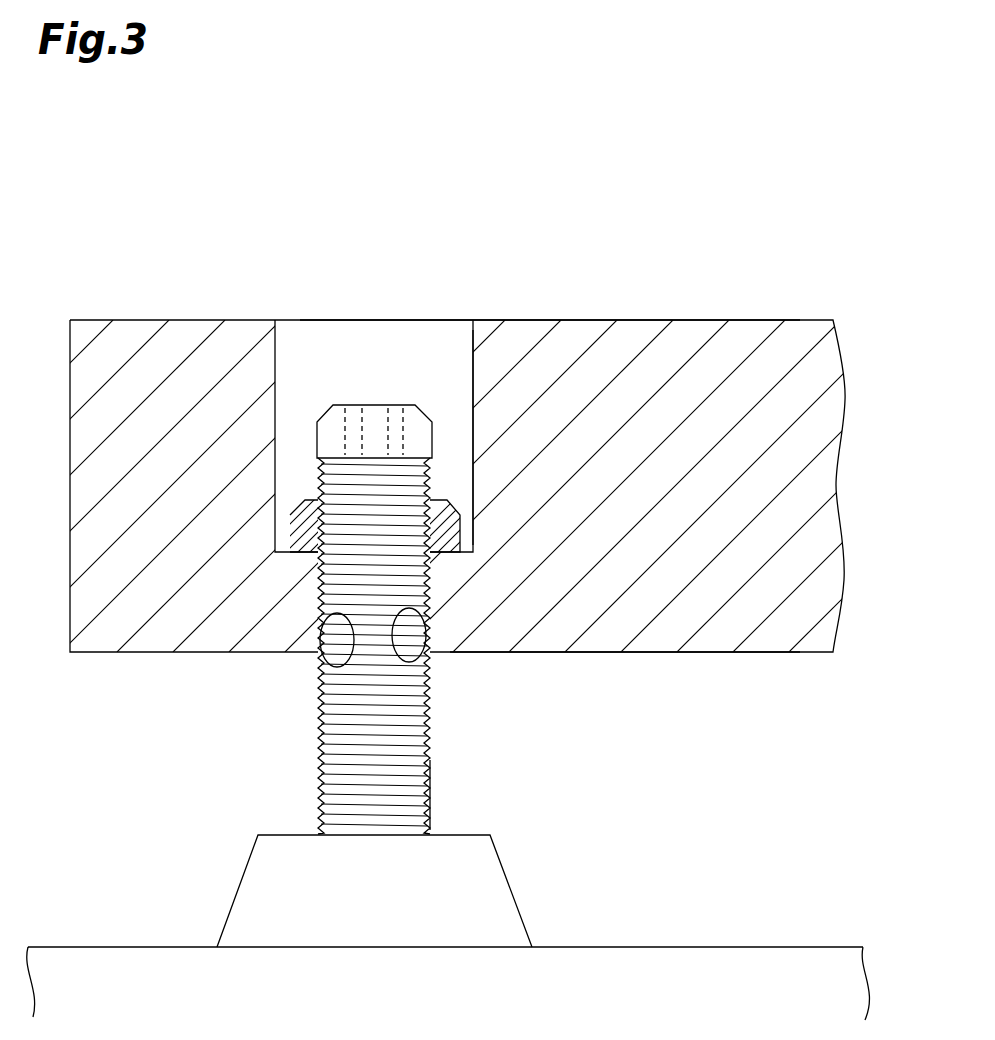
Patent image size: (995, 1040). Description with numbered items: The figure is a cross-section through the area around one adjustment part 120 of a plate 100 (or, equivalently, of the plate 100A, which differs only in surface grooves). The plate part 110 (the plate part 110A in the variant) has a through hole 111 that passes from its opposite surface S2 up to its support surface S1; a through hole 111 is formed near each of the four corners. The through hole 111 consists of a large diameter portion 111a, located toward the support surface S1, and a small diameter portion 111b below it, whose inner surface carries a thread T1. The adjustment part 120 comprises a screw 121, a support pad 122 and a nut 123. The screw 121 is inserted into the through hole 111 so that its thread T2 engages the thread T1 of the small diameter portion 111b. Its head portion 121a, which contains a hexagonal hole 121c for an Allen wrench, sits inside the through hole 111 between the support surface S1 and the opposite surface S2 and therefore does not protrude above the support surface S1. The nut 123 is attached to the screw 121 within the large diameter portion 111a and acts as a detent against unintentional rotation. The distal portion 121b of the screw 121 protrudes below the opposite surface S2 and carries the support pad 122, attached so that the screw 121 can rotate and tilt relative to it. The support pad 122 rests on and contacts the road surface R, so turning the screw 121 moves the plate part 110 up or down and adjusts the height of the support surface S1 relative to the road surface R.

The plate 100 is at (497, 548).
The plate 100A is at (714, 236).
The plate part 110 is at (497, 465).
The plate part 110A is at (571, 320).
The through hole 111 is at (278, 351).
The large diameter portion 111a is at (473, 367).
The small diameter portion 111b is at (414, 660).
The adjustment part 120 is at (458, 747).
The screw 121 is at (319, 730).
The head portion 121a is at (414, 430).
The distal portion 121b is at (365, 813).
The hexagonal hole 121c is at (372, 405).
The support pad 122 is at (517, 893).
The nut 123 is at (297, 498).
The thread T1 is at (328, 666).
The thread T2 is at (432, 797).
The support surface S1 is at (742, 320).
The opposite surface S2 is at (757, 652).
The road surface R is at (786, 947).